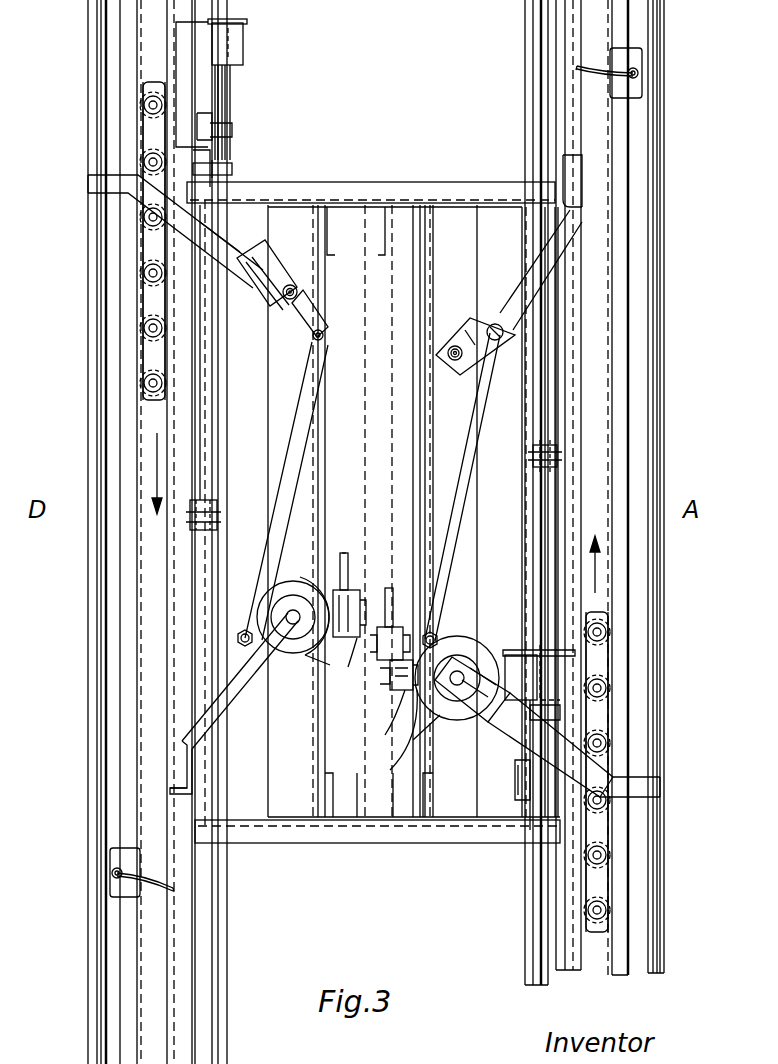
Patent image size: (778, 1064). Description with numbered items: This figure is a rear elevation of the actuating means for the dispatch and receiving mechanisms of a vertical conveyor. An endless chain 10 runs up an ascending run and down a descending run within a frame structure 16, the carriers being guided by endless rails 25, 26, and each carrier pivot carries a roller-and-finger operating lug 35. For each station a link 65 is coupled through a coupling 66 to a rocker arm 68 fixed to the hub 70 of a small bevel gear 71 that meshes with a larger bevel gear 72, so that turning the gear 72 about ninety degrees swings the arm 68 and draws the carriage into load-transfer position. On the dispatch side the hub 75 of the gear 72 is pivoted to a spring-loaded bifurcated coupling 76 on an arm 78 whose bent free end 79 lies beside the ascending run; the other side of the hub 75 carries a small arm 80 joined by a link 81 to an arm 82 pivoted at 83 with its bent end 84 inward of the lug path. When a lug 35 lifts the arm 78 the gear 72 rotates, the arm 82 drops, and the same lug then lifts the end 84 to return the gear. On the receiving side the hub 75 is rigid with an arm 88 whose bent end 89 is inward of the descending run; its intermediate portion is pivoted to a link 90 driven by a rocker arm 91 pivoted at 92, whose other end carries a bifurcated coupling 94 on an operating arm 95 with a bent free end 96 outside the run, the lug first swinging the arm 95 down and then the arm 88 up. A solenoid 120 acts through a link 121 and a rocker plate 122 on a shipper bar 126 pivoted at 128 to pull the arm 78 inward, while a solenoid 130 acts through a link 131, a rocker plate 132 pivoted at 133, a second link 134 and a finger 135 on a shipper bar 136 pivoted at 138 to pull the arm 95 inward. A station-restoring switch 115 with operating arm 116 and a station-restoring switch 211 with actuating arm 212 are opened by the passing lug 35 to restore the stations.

The chain 10 is at (150, 300).
The frame structure 16 is at (430, 240).
The endless rail 25 is at (228, 907).
The endless rail 26 is at (655, 897).
The operating lug 35 is at (147, 117).
The link 65 is at (367, 543).
The coupling 66 is at (338, 562).
The rocker arm 68 is at (397, 687).
The hub 70 is at (393, 650).
The bevel gear 71 is at (323, 660).
The bevel gear 72 is at (255, 634).
The hub 75 is at (283, 607).
The bifurcated coupling 76 is at (468, 718).
The arm 78 is at (595, 722).
The bent free end 79 is at (633, 777).
The small arm 80 is at (440, 700).
The link 81 is at (455, 490).
The arm 82 is at (510, 278).
The pivot 83 is at (447, 350).
The bent end 84 is at (570, 180).
The arm 88 is at (238, 683).
The bent end 89 is at (180, 780).
The link 90 is at (290, 438).
The rocker arm 91 is at (320, 318).
The pivot 92 is at (305, 293).
The bifurcated coupling 94 is at (272, 257).
The operating arm 95 is at (232, 244).
The bent free end 96 is at (88, 180).
The station-restoring switch 115 is at (635, 60).
The operating arm 116 is at (590, 62).
The solenoid 120 is at (505, 645).
The link 121 is at (555, 722).
The rocker plate 122 is at (533, 767).
The shipper bar 126 is at (547, 583).
The pivot 128 is at (557, 457).
The solenoid 130 is at (243, 43).
The link 131 is at (232, 73).
The rocker plate 132 is at (236, 115).
The pivot 133 is at (228, 97).
The second link 134 is at (232, 135).
The finger 135 is at (240, 167).
The shipper bar 136 is at (200, 403).
The pivot 138 is at (215, 515).
The station-restoring switch 211 is at (118, 860).
The actuating arm 212 is at (160, 880).